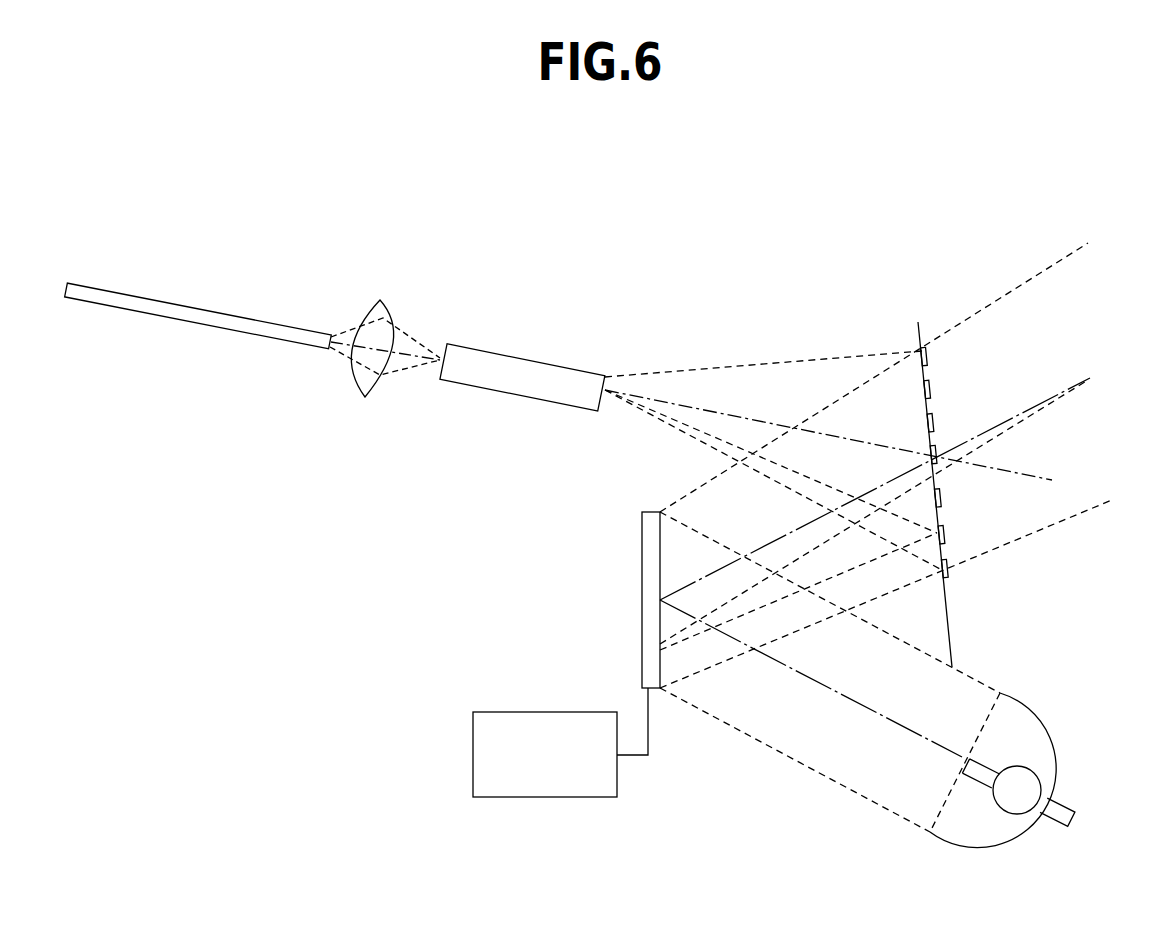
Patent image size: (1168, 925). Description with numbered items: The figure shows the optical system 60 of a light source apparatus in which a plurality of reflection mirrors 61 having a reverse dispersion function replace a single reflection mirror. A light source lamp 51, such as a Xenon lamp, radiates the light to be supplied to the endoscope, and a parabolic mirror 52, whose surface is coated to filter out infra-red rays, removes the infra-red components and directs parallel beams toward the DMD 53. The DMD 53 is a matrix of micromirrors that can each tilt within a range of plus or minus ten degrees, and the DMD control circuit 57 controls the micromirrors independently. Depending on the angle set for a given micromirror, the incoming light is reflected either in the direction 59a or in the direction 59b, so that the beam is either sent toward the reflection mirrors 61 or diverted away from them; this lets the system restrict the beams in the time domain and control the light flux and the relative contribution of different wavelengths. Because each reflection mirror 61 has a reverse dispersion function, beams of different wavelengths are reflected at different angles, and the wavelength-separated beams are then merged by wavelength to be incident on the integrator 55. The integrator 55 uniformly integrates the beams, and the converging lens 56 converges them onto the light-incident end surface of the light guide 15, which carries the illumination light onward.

The light guide 15 is at (270, 320).
The converging lens 56 is at (380, 300).
The integrator 55 is at (520, 357).
The optical system 60 is at (797, 220).
The reflection direction at one micromirror angle 59a is at (1052, 525).
The reflection direction at minus ten degree micromirror angle 59b is at (1030, 280).
The reflection mirrors 61 is at (930, 392).
The DMD (Digital Micromirror Device) 53 is at (642, 630).
The DMD control circuit 57 is at (473, 755).
The parabolic mirror 52 is at (1037, 720).
The light source lamp 51 is at (1077, 813).